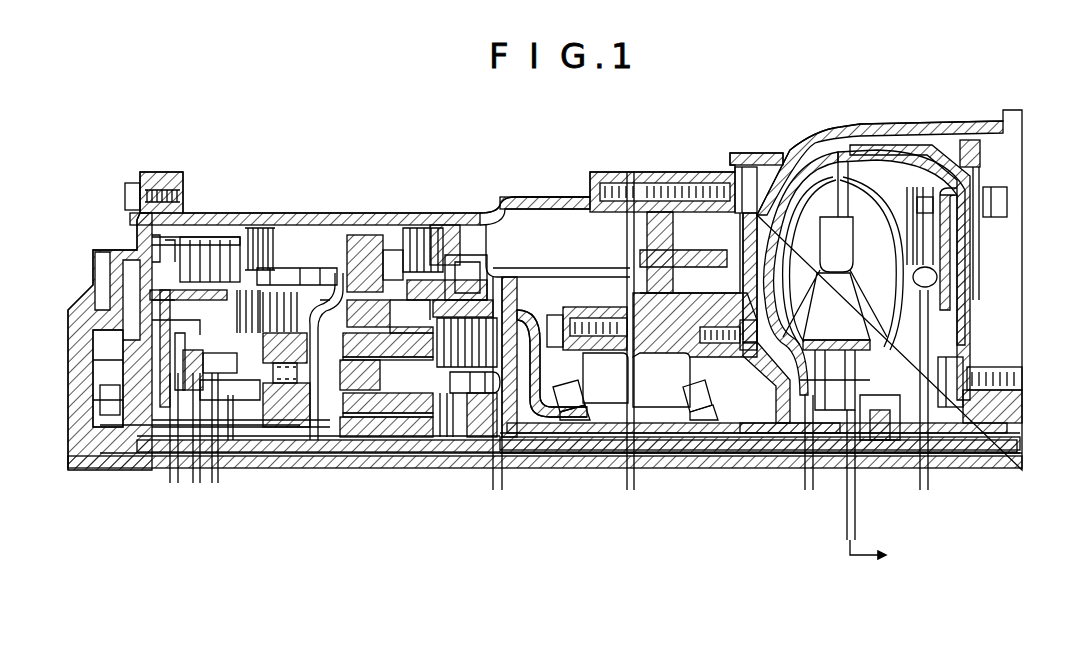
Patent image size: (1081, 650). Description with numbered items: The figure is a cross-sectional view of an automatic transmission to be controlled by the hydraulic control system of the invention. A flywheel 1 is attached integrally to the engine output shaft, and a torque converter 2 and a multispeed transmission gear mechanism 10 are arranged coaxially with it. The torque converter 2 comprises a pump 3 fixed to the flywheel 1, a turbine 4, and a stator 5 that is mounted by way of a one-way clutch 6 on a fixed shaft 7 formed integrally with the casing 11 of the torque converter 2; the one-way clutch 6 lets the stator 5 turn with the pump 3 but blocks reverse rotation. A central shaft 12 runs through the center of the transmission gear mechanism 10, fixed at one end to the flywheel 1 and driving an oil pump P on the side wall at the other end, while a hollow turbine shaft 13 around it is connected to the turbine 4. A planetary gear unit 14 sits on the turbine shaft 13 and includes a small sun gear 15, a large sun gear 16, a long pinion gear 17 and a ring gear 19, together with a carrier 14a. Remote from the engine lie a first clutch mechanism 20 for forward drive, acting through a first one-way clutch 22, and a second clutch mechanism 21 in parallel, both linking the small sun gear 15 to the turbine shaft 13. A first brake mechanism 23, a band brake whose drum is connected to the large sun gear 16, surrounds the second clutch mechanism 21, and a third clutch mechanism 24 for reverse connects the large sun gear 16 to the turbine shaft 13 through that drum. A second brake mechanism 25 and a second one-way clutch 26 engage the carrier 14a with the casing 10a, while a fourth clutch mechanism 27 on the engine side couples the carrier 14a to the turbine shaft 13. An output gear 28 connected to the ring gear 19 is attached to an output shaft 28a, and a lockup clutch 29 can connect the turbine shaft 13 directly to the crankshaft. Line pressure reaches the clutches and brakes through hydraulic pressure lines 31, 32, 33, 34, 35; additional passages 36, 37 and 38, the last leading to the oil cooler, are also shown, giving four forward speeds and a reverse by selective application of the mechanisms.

The flywheel 1 is at (1015, 428).
The torque converter 2 is at (836, 150).
The pump 3 is at (786, 253).
The turbine 4 is at (860, 253).
The stator 5 is at (825, 320).
The one-way clutch 6 is at (870, 445).
The fixed shaft 7 is at (770, 453).
The multispeed transmission gear mechanism 10 is at (441, 203).
The casing 10a is at (487, 212).
The casing 11 is at (690, 178).
The central shaft 12 is at (730, 457).
The turbine shaft 13 is at (673, 453).
The planetary gear unit 14 is at (327, 256).
The carrier 14a is at (394, 298).
The small sun gear 15 is at (413, 427).
The large sun gear 16 is at (353, 440).
The long pinion gear 17 is at (393, 407).
The ring gear 19 is at (420, 400).
The first clutch mechanism 20 is at (292, 282).
The second clutch mechanism 21 is at (255, 305).
The first one-way clutch 22 is at (283, 377).
The first brake mechanism 23 is at (272, 292).
The third clutch mechanism 24 is at (238, 250).
The second brake mechanism 25 is at (460, 235).
The second one-way clutch 26 is at (362, 290).
The fourth clutch mechanism 27 is at (514, 328).
The output gear 28 is at (604, 398).
The output shaft 28a is at (670, 402).
The lockup clutch 29 is at (970, 232).
The hydraulic pressure line 31 is at (170, 473).
The hydraulic pressure line 32 is at (193, 477).
The hydraulic pressure line 33 is at (218, 477).
The hydraulic pressure line 34 is at (503, 483).
The hydraulic pressure line 35 is at (626, 483).
The oil passage 36 is at (812, 473).
The oil passage 37 is at (928, 481).
The oil passage to oil cooler 38 is at (857, 518).
The oil pump P is at (100, 388).